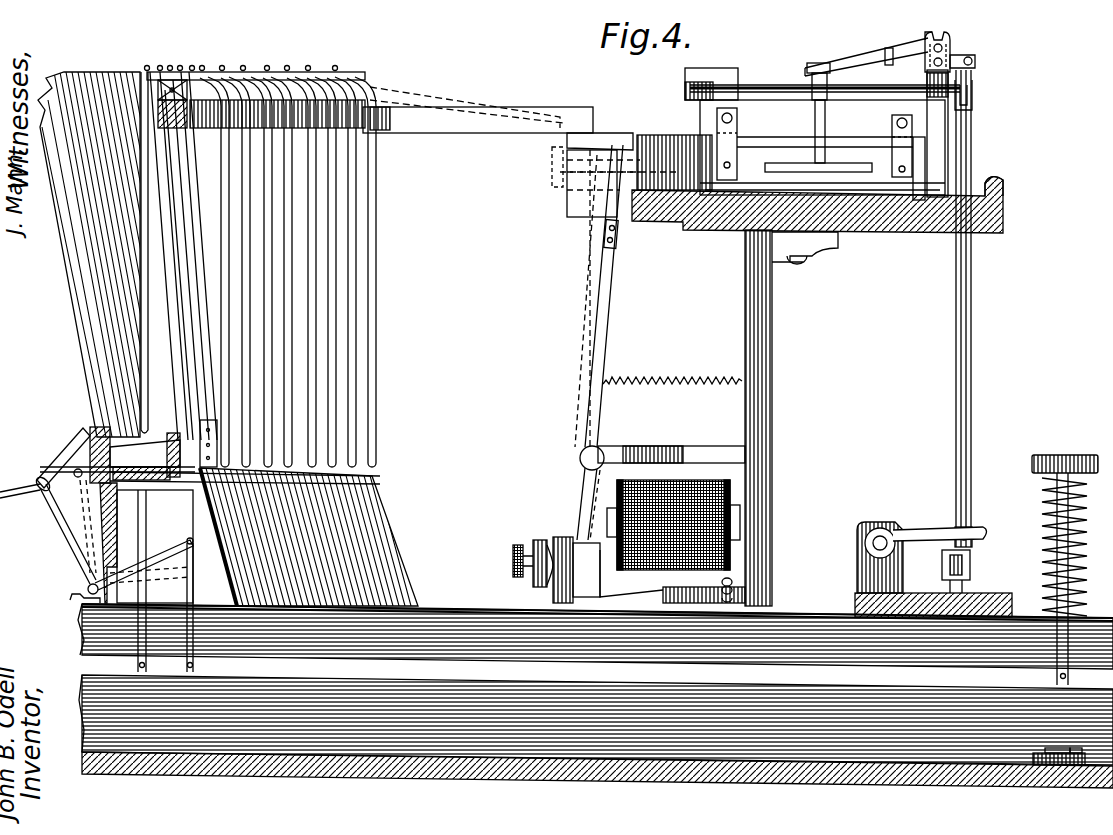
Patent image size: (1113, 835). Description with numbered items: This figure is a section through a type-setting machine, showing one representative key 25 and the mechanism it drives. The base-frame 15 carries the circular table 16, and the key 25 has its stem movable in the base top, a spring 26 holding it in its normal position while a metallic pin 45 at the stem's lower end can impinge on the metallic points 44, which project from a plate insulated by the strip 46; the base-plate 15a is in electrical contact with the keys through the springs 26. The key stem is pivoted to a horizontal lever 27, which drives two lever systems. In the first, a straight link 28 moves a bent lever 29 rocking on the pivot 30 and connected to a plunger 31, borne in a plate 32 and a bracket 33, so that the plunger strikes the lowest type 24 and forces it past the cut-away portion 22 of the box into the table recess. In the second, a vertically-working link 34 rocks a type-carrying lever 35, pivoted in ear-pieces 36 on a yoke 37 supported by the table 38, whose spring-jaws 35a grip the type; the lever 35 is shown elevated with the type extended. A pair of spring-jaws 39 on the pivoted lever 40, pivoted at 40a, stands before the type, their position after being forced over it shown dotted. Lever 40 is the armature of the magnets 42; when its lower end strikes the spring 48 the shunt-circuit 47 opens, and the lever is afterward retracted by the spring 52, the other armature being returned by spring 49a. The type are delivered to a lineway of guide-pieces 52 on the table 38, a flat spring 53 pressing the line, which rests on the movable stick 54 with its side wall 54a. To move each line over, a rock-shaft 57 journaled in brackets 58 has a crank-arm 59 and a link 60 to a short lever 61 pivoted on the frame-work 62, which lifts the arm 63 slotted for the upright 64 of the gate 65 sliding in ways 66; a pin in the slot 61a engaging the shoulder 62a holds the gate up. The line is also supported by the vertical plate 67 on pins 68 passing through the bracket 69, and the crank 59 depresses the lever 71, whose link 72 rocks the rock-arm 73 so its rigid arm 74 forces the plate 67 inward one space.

The base-frame 15 is at (778, 762).
The base-plate 15a is at (808, 614).
The circular table 16 is at (372, 530).
The cut-away portion 22 is at (148, 478).
The type 24 is at (145, 453).
The key 25 is at (1052, 462).
The spring 26 is at (1045, 488).
The horizontal lever 27 is at (800, 690).
The straight link 28 is at (193, 592).
The bent lever 29 is at (163, 558).
The pivot 30 is at (80, 588).
The plunger 31 is at (22, 494).
The plate 32 is at (78, 458).
The bracket 33 is at (68, 444).
The vertically-working link 34 is at (145, 328).
The type-carrying lever 35 is at (205, 368).
The spring-jaws 35a is at (160, 437).
The ear-pieces 36 is at (175, 66).
The yoke 37 is at (440, 122).
The table 38 is at (1004, 217).
The spring-jaws 39 is at (590, 142).
The pivoted lever 40 is at (612, 275).
The pivot 40a is at (580, 460).
The magnets 42 is at (671, 524).
The metallic points 44 is at (1076, 750).
The metallic pin 45 is at (1063, 686).
The insulating strip 46 is at (1035, 757).
The shunt-circuit 47 is at (535, 585).
The spring 48 is at (601, 575).
The spring 49a is at (1057, 750).
The guide-pieces 52 is at (653, 140).
The flat spring 53 is at (660, 165).
The movable stick 54 is at (895, 197).
The upright side wall 54a is at (922, 147).
The rock-shaft 57 is at (880, 543).
The brackets 58 is at (880, 557).
The crank-arm 59 is at (928, 541).
The link 60 is at (973, 408).
The short lever 61 is at (886, 64).
The slot 61a is at (948, 36).
The frame-work 62 is at (937, 133).
The shoulder 62a is at (928, 32).
The arm 63 is at (865, 52).
The upright 64 is at (806, 72).
The gate 65 is at (762, 136).
The ways 66 is at (722, 74).
The vertical plate 67 is at (822, 164).
The pins 68 is at (735, 180).
The bracket 69 is at (738, 125).
The lever 71 is at (971, 572).
The link 72 is at (955, 432).
The rock-arm 73 is at (848, 92).
The rigid arm 74 is at (826, 155).